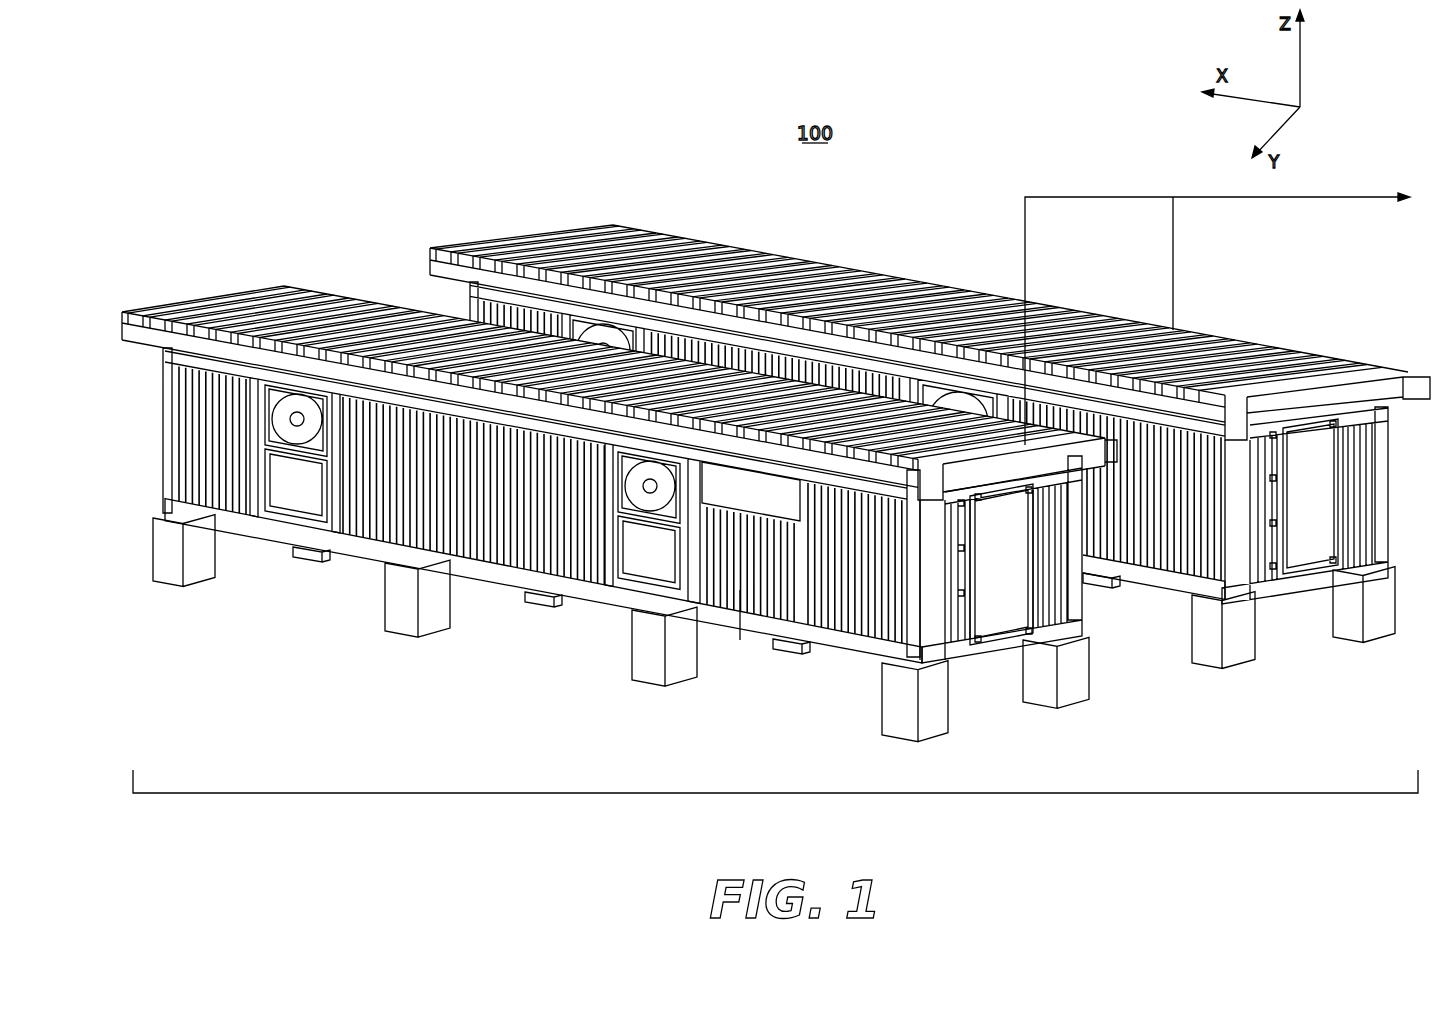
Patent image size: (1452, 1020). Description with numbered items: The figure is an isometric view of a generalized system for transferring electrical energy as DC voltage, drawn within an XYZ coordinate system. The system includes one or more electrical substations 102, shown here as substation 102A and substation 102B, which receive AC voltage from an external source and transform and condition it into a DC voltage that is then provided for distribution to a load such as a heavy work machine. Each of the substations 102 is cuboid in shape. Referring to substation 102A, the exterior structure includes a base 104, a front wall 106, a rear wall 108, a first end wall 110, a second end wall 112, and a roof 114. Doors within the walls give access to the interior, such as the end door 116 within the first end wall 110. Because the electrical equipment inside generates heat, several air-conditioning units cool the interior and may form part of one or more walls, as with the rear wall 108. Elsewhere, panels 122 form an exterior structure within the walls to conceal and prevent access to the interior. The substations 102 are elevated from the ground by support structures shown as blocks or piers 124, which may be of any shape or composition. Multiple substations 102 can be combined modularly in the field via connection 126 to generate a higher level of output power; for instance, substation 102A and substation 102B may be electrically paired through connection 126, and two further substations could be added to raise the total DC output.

The electrical substations 102 is at (482, 798).
The substation 102A is at (628, 458).
The substation 102B is at (930, 396).
The base 104 is at (513, 590).
The front wall 106 is at (1100, 600).
The rear wall 108 is at (750, 605).
The first end wall 110 is at (1062, 625).
The second end wall 112 is at (160, 430).
The roof 114 is at (218, 322).
The end door 116 is at (1005, 605).
The panels 122 is at (498, 420).
The piers 124 is at (882, 700).
The connection 126 is at (1081, 195).